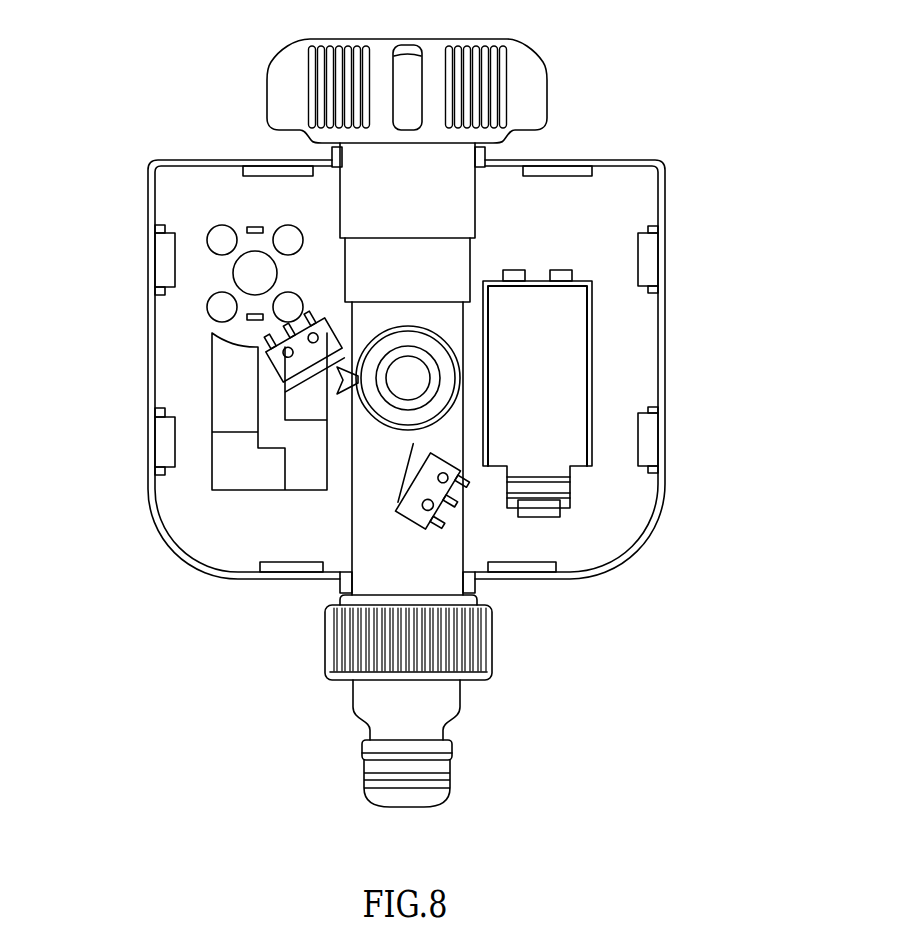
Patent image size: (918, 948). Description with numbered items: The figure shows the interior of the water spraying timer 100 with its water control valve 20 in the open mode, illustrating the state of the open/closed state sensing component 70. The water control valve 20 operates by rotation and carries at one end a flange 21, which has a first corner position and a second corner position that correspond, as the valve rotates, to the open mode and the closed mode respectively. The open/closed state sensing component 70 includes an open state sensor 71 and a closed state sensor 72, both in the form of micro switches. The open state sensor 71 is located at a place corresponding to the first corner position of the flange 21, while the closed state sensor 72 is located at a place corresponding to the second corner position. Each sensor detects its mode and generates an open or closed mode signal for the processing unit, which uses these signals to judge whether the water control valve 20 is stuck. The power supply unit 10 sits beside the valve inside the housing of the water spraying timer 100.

The water spraying timer 100 is at (687, 140).
The power supply unit 10 is at (582, 440).
The water control valve 20 is at (442, 317).
The flange 21 is at (352, 366).
The open/closed state sensing component 70 is at (92, 493).
The open state sensor 71 is at (318, 368).
The closed state sensor 72 is at (412, 461).